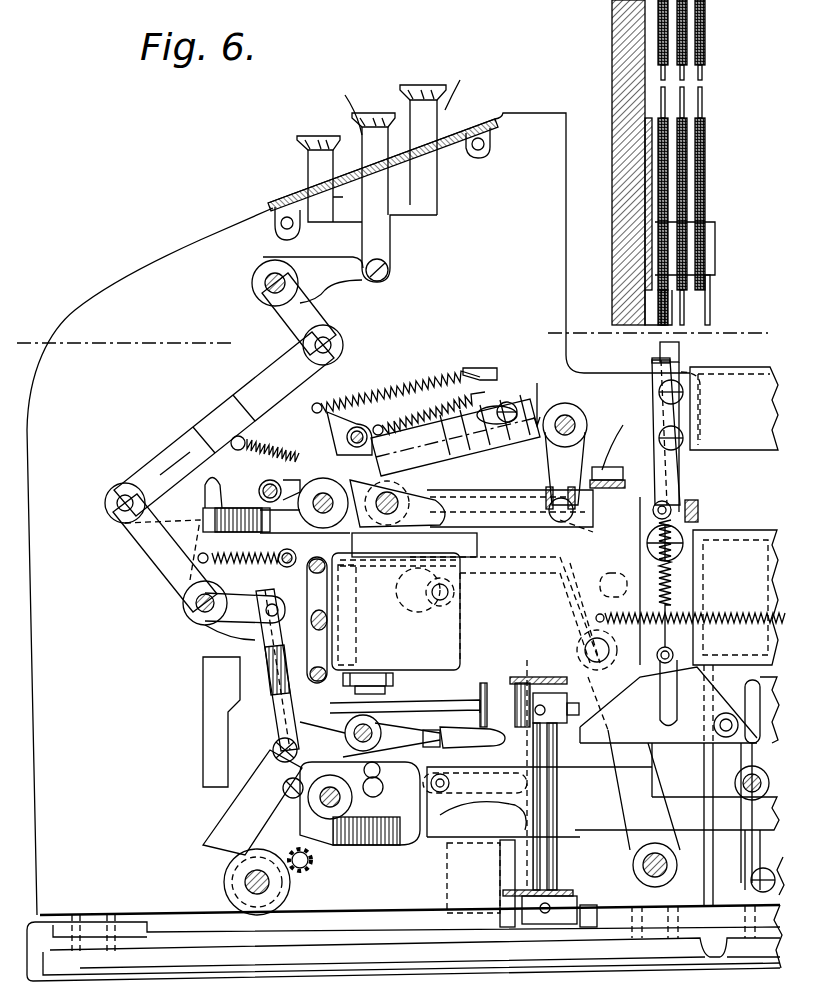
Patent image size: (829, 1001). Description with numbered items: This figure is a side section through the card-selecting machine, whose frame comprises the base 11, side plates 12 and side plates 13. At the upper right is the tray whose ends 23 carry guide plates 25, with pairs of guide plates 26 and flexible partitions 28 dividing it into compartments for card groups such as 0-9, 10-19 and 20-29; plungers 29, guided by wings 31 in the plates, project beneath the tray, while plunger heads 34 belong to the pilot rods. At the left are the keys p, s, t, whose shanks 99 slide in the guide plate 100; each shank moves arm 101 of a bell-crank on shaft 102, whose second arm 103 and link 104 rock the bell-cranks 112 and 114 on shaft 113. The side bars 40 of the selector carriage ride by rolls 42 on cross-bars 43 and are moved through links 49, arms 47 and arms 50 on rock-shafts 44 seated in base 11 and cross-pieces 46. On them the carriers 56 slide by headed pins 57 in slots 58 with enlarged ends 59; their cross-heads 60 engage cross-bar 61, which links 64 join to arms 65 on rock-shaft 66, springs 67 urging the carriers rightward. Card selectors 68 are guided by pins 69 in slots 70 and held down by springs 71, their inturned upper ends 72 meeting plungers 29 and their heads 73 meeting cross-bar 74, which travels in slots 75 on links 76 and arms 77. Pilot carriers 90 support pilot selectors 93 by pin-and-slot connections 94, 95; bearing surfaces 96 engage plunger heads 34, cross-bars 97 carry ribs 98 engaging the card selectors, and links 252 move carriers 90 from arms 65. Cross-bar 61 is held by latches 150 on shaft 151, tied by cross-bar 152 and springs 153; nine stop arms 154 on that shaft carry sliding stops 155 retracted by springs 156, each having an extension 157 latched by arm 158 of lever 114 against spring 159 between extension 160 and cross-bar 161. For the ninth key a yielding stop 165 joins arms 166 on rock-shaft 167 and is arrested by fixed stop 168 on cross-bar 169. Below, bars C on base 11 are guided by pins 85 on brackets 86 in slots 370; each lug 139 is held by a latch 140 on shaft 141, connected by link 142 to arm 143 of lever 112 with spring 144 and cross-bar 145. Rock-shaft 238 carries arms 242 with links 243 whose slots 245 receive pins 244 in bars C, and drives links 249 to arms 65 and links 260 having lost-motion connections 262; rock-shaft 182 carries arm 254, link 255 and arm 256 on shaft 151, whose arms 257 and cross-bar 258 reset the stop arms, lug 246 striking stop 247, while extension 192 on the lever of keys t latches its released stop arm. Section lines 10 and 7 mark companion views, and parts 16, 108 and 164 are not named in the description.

The section line 10 is at (26, 333).
The side plates 12 is at (522, 113).
The set of keys p is at (318, 136).
The set of keys s is at (372, 113).
The set of keys t is at (432, 85).
The key shank 99 is at (346, 107).
The guide plate 100 is at (462, 87).
The arm of bell-crank lever 101 is at (330, 257).
The shaft 102 is at (265, 277).
The second arm of bell-crank lever 103 is at (275, 315).
The link 104 is at (233, 412).
The latching arm 158 is at (179, 461).
The secondary bell-crank lever 114 is at (165, 575).
The primary bell-crank lever 112 is at (170, 530).
The shaft 113 is at (210, 600).
The arm 143 is at (240, 615).
The extension 192 is at (205, 703).
The extension 157 is at (203, 498).
The spring 144 is at (248, 501).
The cross-bar 145 is at (291, 549).
The spring anchor 108 is at (240, 436).
The springs 153 is at (272, 448).
The cross-bar 152 is at (268, 481).
The arm 256 is at (259, 495).
The rock-shaft 151 is at (318, 495).
The cross-bar 61 is at (380, 493).
The latches 150 is at (385, 527).
The extension 160 is at (322, 435).
The cross-bar 258 is at (360, 427).
The arms 257 is at (396, 392).
The spring 156 is at (440, 383).
The spring 159 is at (420, 380).
The cross-bar 161 is at (490, 368).
The stop arms 154 is at (428, 413).
The slide plate 164 is at (478, 455).
The stop 155 is at (501, 401).
The section line 7 is at (537, 396).
The rock-shaft 167 is at (566, 413).
The arms 166 is at (578, 455).
The yielding stop 165 is at (546, 500).
The fixed stop 168 is at (560, 490).
The cross-bar 169 is at (624, 439).
The rib 98 is at (670, 497).
The card selectors 68 is at (648, 500).
The link 252 is at (594, 522).
The tray ends 23 is at (612, 32).
The guide plates 25 is at (612, 138).
The plate 16 is at (630, 221).
The guide plates 26 is at (700, 118).
The flexible partition 28 is at (702, 95).
The key group 20-29 is at (723, 11).
The key group 10-19 is at (715, 25).
The key group 0-9 is at (702, 38).
The wings 31 is at (712, 238).
The plunger heads 34 is at (654, 307).
The plungers 29 is at (700, 320).
The pilot selectors 93 is at (679, 358).
The pin connection 94 is at (682, 388).
The slot connection 95 is at (680, 420).
The bearing surface 96 is at (660, 346).
The upper ends of selectors 72 is at (652, 364).
The pilot carriers 90 is at (750, 380).
The cross-bar 97 is at (690, 500).
The headed pins 69 is at (682, 528).
The slots 70 is at (672, 580).
The carriers 56 is at (740, 530).
The springs 67 is at (745, 612).
The spring 71 is at (655, 570).
The slots 58 is at (528, 512).
The links 64 is at (492, 515).
The arms 65 is at (580, 563).
The links 249 is at (500, 640).
The headed pins 57 is at (442, 584).
The enlarged slot ends 59 is at (425, 605).
The cross-heads 60 is at (352, 545).
The side bars 40 is at (345, 590).
The cross-bars 43 is at (312, 570).
The rolls 42 is at (322, 630).
The links 49 is at (385, 673).
The links 260 is at (405, 690).
The lost motion connection 262 is at (465, 700).
The cross-pieces 46 is at (505, 665).
The arms 47 is at (543, 665).
The link 142 is at (290, 690).
The shaft 141 is at (345, 722).
The link 255 is at (274, 748).
The arm 254 is at (284, 785).
The arms 242 is at (240, 820).
The rock-shaft 238 is at (245, 890).
The links 243 is at (315, 855).
The stop 247 is at (360, 803).
The rock-shaft 182 is at (350, 830).
The lug 139 is at (380, 770).
The lug 246 is at (383, 790).
The slot 245 is at (467, 747).
The pin 244 is at (475, 783).
The latch 140 is at (505, 738).
The bars C is at (539, 802).
The slots 370 is at (450, 825).
The brackets 86 is at (447, 890).
The pins 85 is at (512, 883).
The rock-shafts 44 is at (553, 862).
The arms 50 is at (572, 890).
The base 11 is at (345, 930).
The head 73 is at (690, 735).
The rock-shaft 66 is at (665, 870).
The vertical slots 75 is at (727, 713).
The side plates 13 is at (763, 720).
The cross-bar 74 is at (745, 778).
The links 76 is at (752, 845).
The arms 77 is at (751, 880).